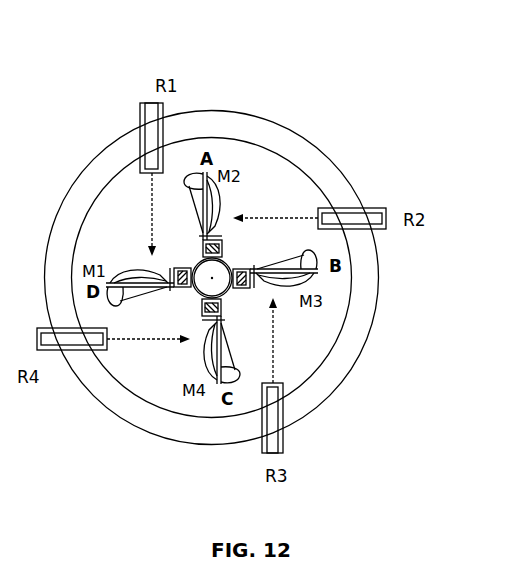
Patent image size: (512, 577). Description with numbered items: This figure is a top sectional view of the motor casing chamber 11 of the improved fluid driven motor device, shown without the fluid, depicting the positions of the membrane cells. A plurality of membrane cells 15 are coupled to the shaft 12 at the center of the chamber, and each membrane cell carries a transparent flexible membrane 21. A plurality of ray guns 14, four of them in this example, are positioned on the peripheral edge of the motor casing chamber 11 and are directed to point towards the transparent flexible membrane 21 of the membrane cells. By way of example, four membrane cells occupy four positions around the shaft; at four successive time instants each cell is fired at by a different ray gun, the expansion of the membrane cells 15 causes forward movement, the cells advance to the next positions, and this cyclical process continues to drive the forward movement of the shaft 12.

The motor casing chamber 11 is at (259, 112).
The shaft 12 is at (214, 277).
The ray gun 14 is at (132, 97).
The membrane cell 15 is at (348, 262).
The transparent flexible membrane 21 is at (126, 268).